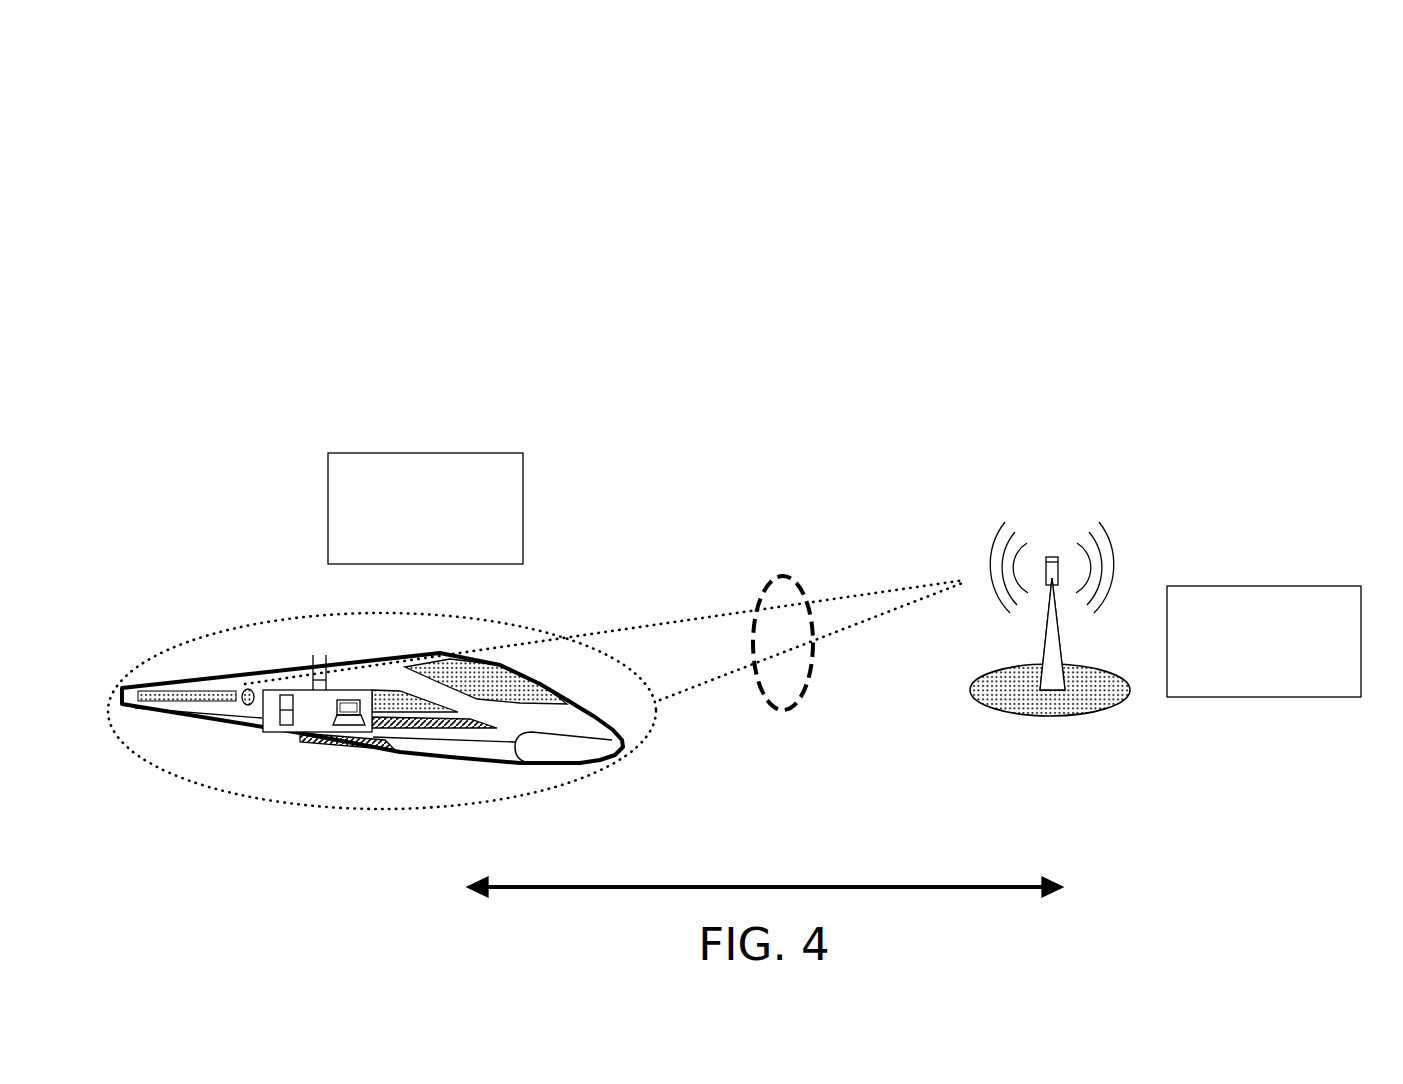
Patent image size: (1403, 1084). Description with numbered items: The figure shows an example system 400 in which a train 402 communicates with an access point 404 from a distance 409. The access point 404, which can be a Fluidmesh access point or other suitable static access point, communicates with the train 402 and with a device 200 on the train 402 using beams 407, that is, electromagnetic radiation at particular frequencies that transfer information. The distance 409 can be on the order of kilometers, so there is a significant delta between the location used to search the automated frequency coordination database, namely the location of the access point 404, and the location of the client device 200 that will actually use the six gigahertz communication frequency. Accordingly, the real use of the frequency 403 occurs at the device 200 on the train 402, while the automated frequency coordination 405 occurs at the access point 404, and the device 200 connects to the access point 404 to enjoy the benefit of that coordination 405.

The system 400 is at (1309, 94).
The device 200 is at (347, 712).
The train 402 is at (502, 763).
The real use of the frequency 403 is at (297, 616).
The access point 404 is at (1095, 527).
The automated frequency coordination 405 is at (1127, 682).
The beams 407 is at (780, 577).
The distance 409 is at (980, 889).